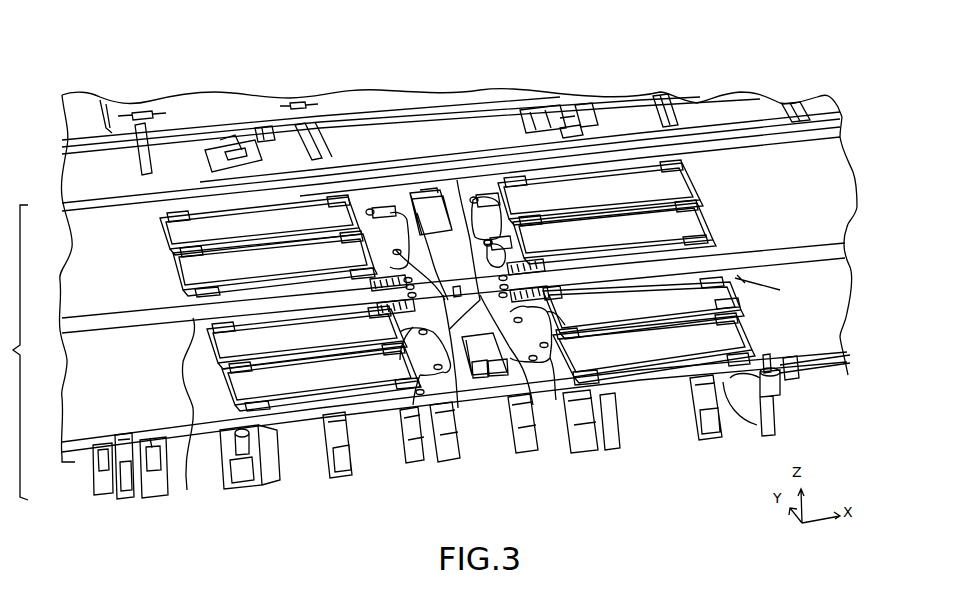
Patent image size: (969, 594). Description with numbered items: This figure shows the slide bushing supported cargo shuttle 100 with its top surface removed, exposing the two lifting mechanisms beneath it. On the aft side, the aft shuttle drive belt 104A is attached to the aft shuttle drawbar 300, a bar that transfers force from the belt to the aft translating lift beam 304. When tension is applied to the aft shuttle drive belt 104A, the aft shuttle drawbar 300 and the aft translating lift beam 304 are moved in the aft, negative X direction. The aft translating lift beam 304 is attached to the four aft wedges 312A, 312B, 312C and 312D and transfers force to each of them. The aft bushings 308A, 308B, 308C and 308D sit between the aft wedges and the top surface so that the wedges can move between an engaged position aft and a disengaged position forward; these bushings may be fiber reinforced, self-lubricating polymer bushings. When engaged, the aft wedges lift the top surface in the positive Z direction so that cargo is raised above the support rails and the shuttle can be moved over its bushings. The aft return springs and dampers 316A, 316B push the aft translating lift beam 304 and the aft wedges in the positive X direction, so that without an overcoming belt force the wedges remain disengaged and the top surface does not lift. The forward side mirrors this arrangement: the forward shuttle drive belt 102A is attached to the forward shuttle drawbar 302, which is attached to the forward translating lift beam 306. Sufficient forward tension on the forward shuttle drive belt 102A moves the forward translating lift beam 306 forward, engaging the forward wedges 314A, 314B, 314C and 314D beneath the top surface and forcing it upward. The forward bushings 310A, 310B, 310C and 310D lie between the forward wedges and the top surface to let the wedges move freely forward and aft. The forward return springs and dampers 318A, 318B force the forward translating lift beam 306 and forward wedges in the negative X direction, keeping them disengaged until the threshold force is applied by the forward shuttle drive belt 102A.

The slide bushing supported cargo shuttle 100 is at (17, 352).
The forward shuttle drive belt 102A is at (832, 258).
The aft shuttle drive belt 104A is at (115, 328).
The aft shuttle drawbar 300 is at (228, 472).
The forward shuttle drawbar 302 is at (737, 280).
The aft translating lift beam 304 is at (455, 395).
The forward translating lift beam 306 is at (452, 190).
The aft bushing 308A is at (303, 394).
The aft bushing 308B is at (292, 353).
The aft bushing 308C is at (269, 272).
The aft bushing 308D is at (260, 236).
The forward bushing 310A is at (703, 353).
The forward bushing 310B is at (692, 312).
The forward bushing 310C is at (668, 234).
The forward bushing 310D is at (661, 195).
The aft wedge 312A is at (432, 408).
The aft wedge 312B is at (427, 395).
The aft wedge 312C is at (388, 277).
The aft wedge 312D is at (374, 208).
The forward wedge 314A is at (553, 385).
The forward wedge 314B is at (545, 300).
The forward wedge 314C is at (492, 240).
The forward wedge 314D is at (479, 200).
The aft return spring and damper 316A is at (440, 372).
The aft return spring and damper 316B is at (417, 260).
The forward return spring and damper 318A is at (548, 362).
The forward return spring and damper 318B is at (530, 262).